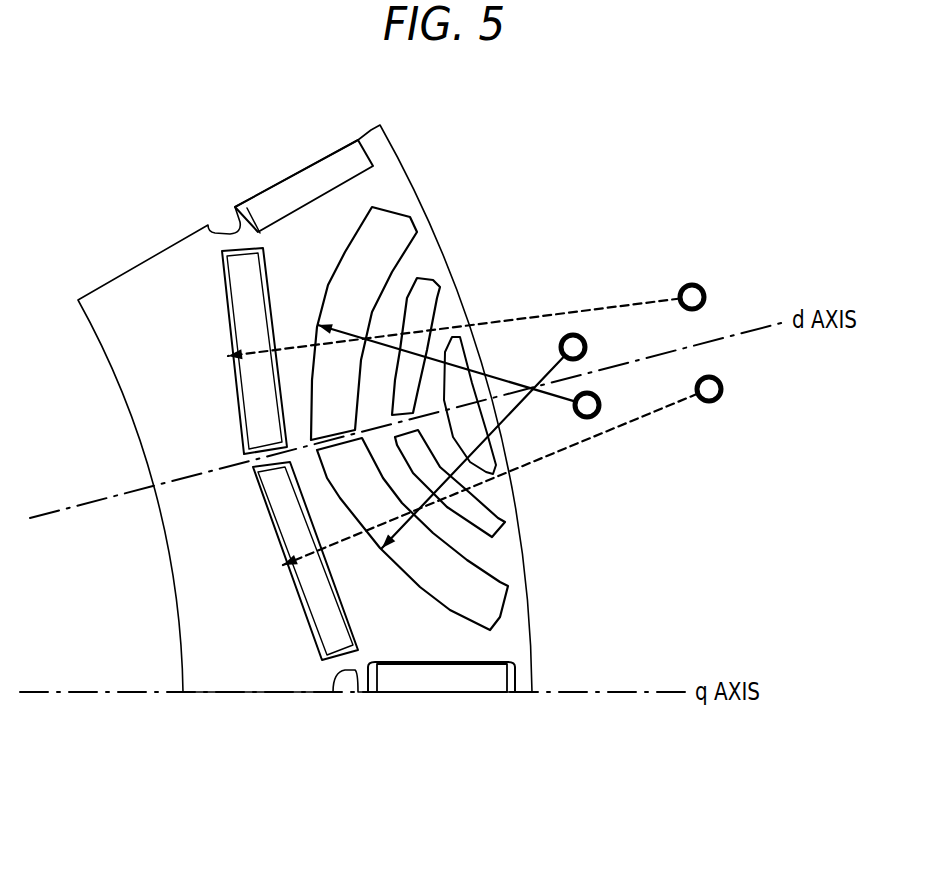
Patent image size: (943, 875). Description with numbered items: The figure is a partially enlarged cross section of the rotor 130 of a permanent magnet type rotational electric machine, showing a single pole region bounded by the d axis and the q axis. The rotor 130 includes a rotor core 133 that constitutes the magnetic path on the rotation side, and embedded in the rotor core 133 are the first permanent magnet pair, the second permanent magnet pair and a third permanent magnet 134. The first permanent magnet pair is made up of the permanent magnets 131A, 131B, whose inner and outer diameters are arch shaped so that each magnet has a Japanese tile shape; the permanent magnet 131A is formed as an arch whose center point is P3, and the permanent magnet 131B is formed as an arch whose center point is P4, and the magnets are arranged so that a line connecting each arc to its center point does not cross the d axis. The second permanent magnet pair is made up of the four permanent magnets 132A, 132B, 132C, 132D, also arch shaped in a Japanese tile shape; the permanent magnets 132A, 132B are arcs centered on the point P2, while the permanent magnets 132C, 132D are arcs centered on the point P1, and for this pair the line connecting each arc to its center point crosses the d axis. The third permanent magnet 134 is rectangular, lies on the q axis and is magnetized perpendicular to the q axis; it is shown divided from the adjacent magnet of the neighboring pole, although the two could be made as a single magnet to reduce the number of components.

The rotor 130 is at (172, 568).
The permanent magnet 131A is at (235, 307).
The permanent magnet 131B is at (318, 630).
The permanent magnet 132A is at (380, 242).
The permanent magnet 132B is at (423, 297).
The permanent magnet 132C is at (488, 519).
The permanent magnet 132D is at (487, 593).
The rotor core 133 is at (223, 663).
The third permanent magnet 134 is at (305, 180).
The center point P1 is at (507, 427).
The center point P2 is at (485, 390).
The center point P3 is at (492, 309).
The center point P4 is at (528, 457).